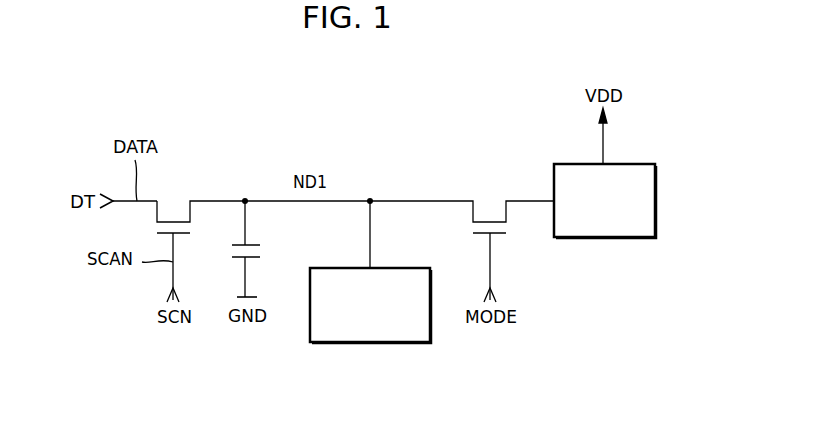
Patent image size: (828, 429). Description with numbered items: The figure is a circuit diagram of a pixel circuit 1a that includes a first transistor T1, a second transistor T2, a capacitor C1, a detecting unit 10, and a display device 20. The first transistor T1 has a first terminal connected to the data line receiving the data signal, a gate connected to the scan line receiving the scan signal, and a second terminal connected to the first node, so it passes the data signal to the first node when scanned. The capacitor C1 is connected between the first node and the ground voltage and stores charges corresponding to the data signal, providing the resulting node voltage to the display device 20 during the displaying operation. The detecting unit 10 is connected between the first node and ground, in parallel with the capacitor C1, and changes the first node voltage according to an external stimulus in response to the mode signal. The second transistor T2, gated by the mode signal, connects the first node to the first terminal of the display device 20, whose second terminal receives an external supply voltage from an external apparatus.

The pixel circuit 1a is at (386, 111).
The detecting unit 10 is at (393, 267).
The display device 20 is at (630, 162).
The first transistor T1 is at (201, 238).
The second transistor T2 is at (462, 239).
The capacitor C1 is at (259, 249).